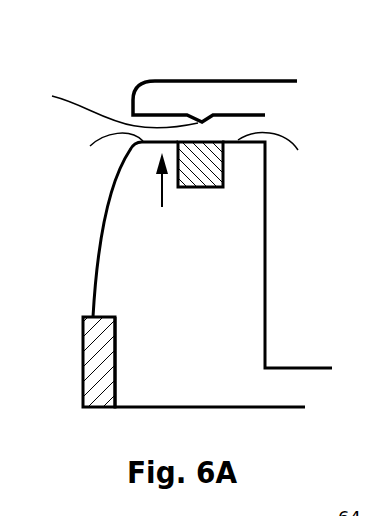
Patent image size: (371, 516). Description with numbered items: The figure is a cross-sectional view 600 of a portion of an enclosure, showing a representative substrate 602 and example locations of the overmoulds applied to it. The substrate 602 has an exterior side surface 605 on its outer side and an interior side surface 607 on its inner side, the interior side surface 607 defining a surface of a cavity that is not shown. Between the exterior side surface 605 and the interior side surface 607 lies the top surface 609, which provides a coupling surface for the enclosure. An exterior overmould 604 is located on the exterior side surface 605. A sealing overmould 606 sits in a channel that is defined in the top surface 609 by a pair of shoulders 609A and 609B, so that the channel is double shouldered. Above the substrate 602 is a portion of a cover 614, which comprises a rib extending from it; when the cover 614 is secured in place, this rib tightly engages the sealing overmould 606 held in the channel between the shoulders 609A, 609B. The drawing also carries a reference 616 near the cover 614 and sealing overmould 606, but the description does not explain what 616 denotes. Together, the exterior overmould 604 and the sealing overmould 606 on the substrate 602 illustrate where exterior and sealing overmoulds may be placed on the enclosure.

The cross-sectional view 600 is at (106, 418).
The substrate 602 is at (202, 276).
The exterior overmould 604 is at (85, 318).
The exterior side surface 605 is at (102, 237).
The sealing overmould 606 is at (193, 188).
The interior side surface 607 is at (267, 213).
The top surface 609 is at (167, 196).
The shoulder 609A is at (105, 151).
The shoulder 609B is at (286, 152).
The cover 614 is at (190, 81).
The notch 616 is at (116, 100).